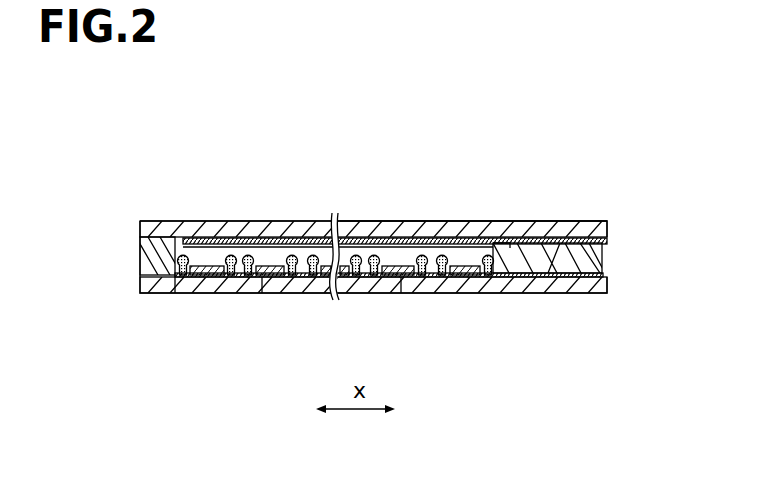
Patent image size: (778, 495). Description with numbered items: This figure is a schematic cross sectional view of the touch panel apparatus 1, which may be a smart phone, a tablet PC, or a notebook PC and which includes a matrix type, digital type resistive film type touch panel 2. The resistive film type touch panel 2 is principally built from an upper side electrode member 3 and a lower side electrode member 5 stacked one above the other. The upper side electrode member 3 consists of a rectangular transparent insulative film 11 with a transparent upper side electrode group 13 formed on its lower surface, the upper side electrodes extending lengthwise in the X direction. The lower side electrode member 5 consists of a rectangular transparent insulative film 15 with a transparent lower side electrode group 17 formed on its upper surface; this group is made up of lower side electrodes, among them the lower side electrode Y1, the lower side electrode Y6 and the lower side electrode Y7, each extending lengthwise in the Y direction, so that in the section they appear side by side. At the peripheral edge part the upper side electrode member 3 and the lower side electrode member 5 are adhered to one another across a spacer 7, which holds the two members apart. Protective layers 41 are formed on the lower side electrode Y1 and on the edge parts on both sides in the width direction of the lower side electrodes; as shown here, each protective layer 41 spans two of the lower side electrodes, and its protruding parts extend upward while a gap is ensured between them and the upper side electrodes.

The touch panel apparatus 1 is at (548, 153).
The resistive film type touch panel 2 is at (560, 218).
The upper side electrode member 3 is at (390, 218).
The lower side electrode member 5 is at (370, 300).
The spacer 7 is at (150, 254).
The transparent insulative film 11 is at (296, 221).
The upper side electrode group 13 is at (258, 233).
The transparent insulative film 15 is at (300, 290).
The lower side electrode group 17 is at (421, 285).
The protective layer 41 is at (214, 254).
The lower side electrode Y1 is at (401, 285).
The lower side electrode Y6 is at (262, 284).
The lower side electrode Y7 is at (191, 287).